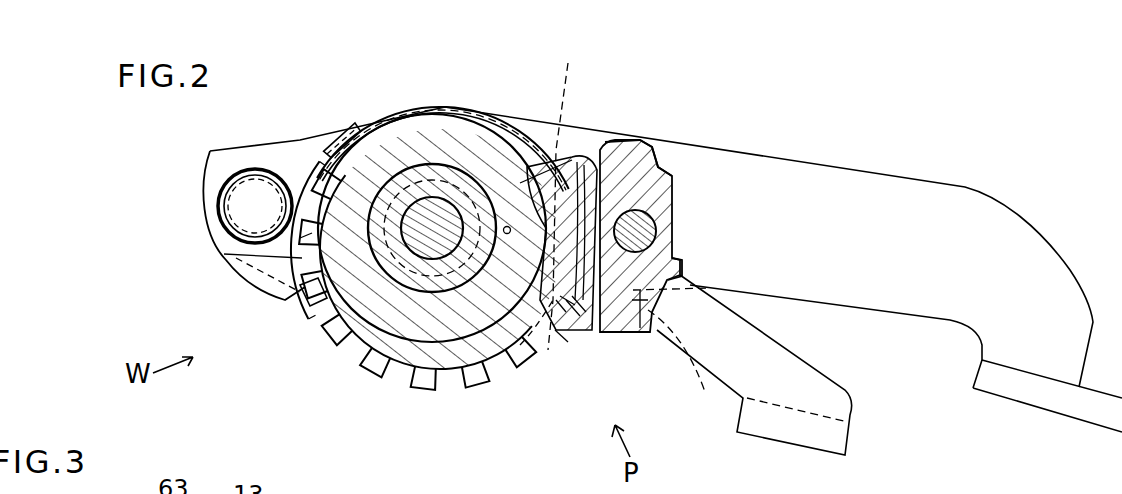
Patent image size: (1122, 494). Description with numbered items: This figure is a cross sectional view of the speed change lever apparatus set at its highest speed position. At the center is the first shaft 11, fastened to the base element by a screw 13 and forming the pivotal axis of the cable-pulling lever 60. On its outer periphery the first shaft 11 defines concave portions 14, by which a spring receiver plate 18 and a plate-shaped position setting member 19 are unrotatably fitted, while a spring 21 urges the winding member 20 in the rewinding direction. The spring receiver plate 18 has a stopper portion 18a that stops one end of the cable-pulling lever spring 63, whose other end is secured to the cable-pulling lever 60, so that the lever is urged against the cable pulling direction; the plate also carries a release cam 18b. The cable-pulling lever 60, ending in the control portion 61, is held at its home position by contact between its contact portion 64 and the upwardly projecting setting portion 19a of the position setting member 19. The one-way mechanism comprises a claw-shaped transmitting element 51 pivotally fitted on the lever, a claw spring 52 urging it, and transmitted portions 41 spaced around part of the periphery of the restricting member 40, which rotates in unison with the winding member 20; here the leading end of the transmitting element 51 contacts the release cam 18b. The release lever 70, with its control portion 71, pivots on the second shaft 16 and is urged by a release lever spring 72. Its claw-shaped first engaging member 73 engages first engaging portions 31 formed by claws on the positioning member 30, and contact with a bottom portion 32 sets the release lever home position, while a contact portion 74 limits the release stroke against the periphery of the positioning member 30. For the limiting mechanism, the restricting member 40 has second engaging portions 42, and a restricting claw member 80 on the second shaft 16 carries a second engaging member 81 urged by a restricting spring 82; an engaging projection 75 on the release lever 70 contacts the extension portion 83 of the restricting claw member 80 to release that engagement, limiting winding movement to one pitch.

The first shaft 11 is at (430, 165).
The screw 13 is at (462, 197).
The concave portions 14 is at (455, 135).
The second shaft 16 is at (657, 214).
The spring receiver plate 18 is at (297, 162).
The stopper portion 18a is at (342, 130).
The release cam 18b is at (300, 287).
The position setting member 19 is at (520, 345).
The setting portion 19a is at (577, 194).
The winding member 20 is at (515, 190).
The spring 21 is at (506, 226).
The positioning member 30 is at (458, 385).
The first engaging portions 31 is at (572, 300).
The bottom portion 32 is at (560, 305).
The restricting member 40 is at (420, 385).
The transmitted portions 41 is at (305, 238).
The second engaging portions 42 is at (620, 140).
The transmitting element 51 is at (260, 286).
The claw spring 52 is at (283, 168).
The cable-pulling lever 60 is at (838, 167).
The control portion 61 is at (1047, 412).
The cable-pulling lever spring 63 is at (367, 128).
The contact portion 64 is at (562, 345).
The release lever 70 is at (827, 370).
The control portion 71 is at (790, 457).
The release lever spring 72 is at (682, 268).
The first engaging member 73 is at (568, 298).
The contact portion 74 is at (640, 152).
The engaging projection 75 is at (682, 355).
The restricting claw member 80 is at (675, 190).
The second engaging member 81 is at (587, 152).
The restricting spring 82 is at (657, 163).
The extension portion 83 is at (630, 328).